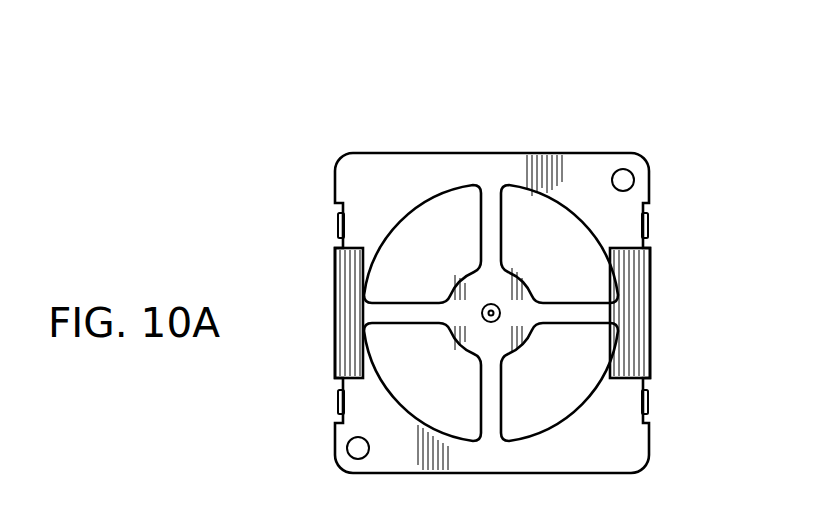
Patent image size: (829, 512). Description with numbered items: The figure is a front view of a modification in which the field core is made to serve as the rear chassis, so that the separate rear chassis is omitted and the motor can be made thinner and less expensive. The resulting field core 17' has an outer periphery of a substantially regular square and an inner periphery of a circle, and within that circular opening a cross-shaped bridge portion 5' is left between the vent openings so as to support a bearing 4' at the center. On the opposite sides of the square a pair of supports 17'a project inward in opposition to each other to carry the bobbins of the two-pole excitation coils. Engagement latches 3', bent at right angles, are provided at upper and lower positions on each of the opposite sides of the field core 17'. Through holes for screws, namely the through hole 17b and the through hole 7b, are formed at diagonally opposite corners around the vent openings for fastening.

The field core 17' is at (498, 283).
The supports 17'a is at (502, 307).
The through hole for screw 17b is at (623, 180).
The through hole for screw 7b is at (352, 452).
The engagement latches 3' is at (487, 315).
The bridge portion 5' is at (491, 313).
The bearing 4' is at (521, 342).